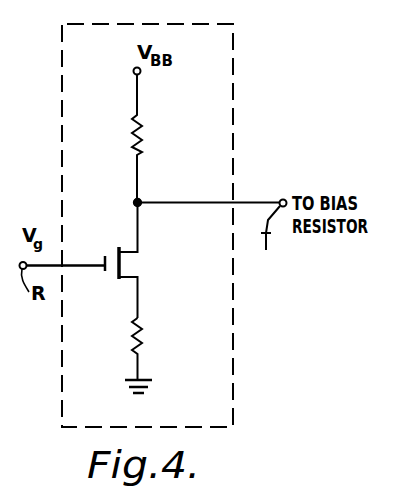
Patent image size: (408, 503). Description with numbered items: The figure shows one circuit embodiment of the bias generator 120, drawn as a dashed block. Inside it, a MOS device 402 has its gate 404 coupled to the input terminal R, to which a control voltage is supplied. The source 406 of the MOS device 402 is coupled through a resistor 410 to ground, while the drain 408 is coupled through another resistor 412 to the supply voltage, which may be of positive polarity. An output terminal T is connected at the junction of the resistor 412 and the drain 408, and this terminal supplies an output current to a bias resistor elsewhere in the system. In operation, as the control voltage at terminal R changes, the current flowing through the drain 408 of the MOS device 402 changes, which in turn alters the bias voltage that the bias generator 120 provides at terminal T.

The bias generator 120 is at (300, 87).
The MOS device 402 is at (111, 273).
The gate 404 is at (96, 263).
The source 406 is at (126, 279).
The drain 408 is at (128, 251).
The resistor 410 is at (146, 341).
The resistor 412 is at (145, 141).